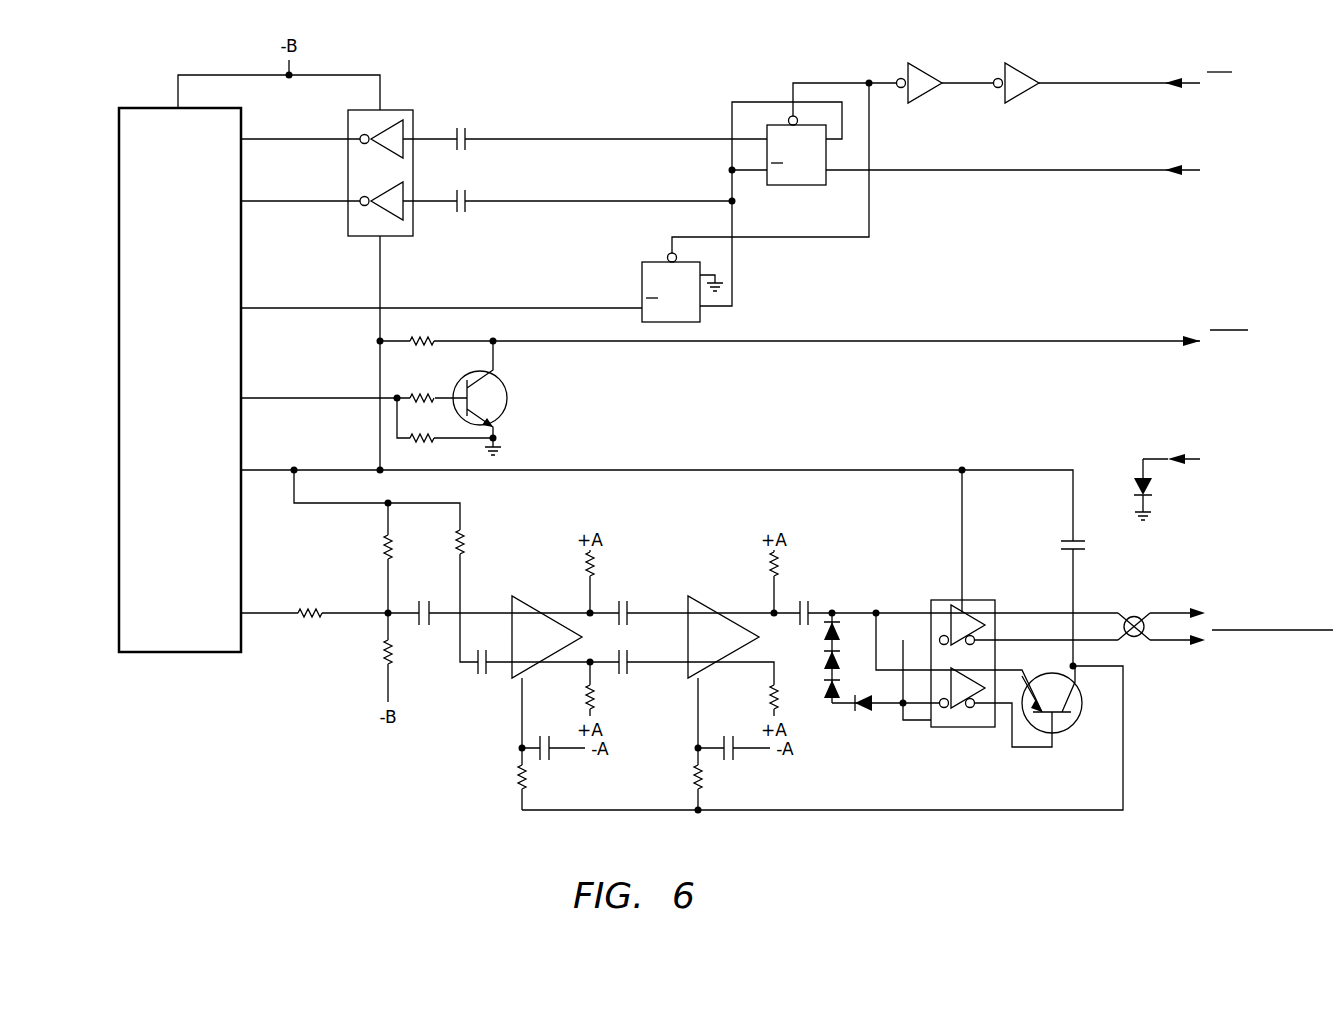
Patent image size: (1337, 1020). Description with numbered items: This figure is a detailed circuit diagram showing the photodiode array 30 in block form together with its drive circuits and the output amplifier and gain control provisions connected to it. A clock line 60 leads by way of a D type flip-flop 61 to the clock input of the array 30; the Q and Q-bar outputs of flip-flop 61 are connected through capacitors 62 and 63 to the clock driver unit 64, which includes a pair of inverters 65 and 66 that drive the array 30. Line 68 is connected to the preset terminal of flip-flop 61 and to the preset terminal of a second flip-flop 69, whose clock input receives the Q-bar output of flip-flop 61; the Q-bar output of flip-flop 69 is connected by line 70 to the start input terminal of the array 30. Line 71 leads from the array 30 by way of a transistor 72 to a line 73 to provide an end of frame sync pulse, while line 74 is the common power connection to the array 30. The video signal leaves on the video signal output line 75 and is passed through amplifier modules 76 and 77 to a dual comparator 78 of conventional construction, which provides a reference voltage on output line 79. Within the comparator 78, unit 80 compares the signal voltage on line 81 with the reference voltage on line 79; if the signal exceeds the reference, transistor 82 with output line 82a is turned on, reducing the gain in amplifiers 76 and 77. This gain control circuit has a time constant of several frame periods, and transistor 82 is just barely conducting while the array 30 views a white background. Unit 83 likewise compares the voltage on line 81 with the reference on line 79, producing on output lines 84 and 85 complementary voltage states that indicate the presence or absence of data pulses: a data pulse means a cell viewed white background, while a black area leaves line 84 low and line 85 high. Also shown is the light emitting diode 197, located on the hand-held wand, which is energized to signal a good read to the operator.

The photodiode array 30 is at (119, 570).
The clock line 60 is at (1060, 169).
The D type flip-flop 61 is at (802, 185).
The capacitor 62 is at (465, 128).
The capacitor 63 is at (466, 212).
The clock driver unit 64 is at (351, 236).
The inverter 65 is at (400, 121).
The inverter 66 is at (398, 222).
The line 68 is at (1098, 83).
The second flip-flop 69 is at (643, 272).
The line 70 is at (566, 308).
The line 71 is at (306, 398).
The transistor 72 is at (507, 398).
The line 73 is at (605, 342).
The line 74 is at (850, 470).
The video signal output line 75 is at (271, 613).
The amplifier module 76 is at (527, 605).
The amplifier module 77 is at (710, 605).
The dual comparator 78 is at (932, 600).
The output line 79 is at (903, 721).
The unit 80 is at (962, 727).
The line 81 is at (854, 613).
The transistor 82 is at (1075, 722).
The output line 82a is at (1044, 811).
The unit 83 is at (977, 605).
The output line 84 is at (1174, 613).
The output line 85 is at (1174, 641).
The light emitting diode 197 is at (1165, 443).